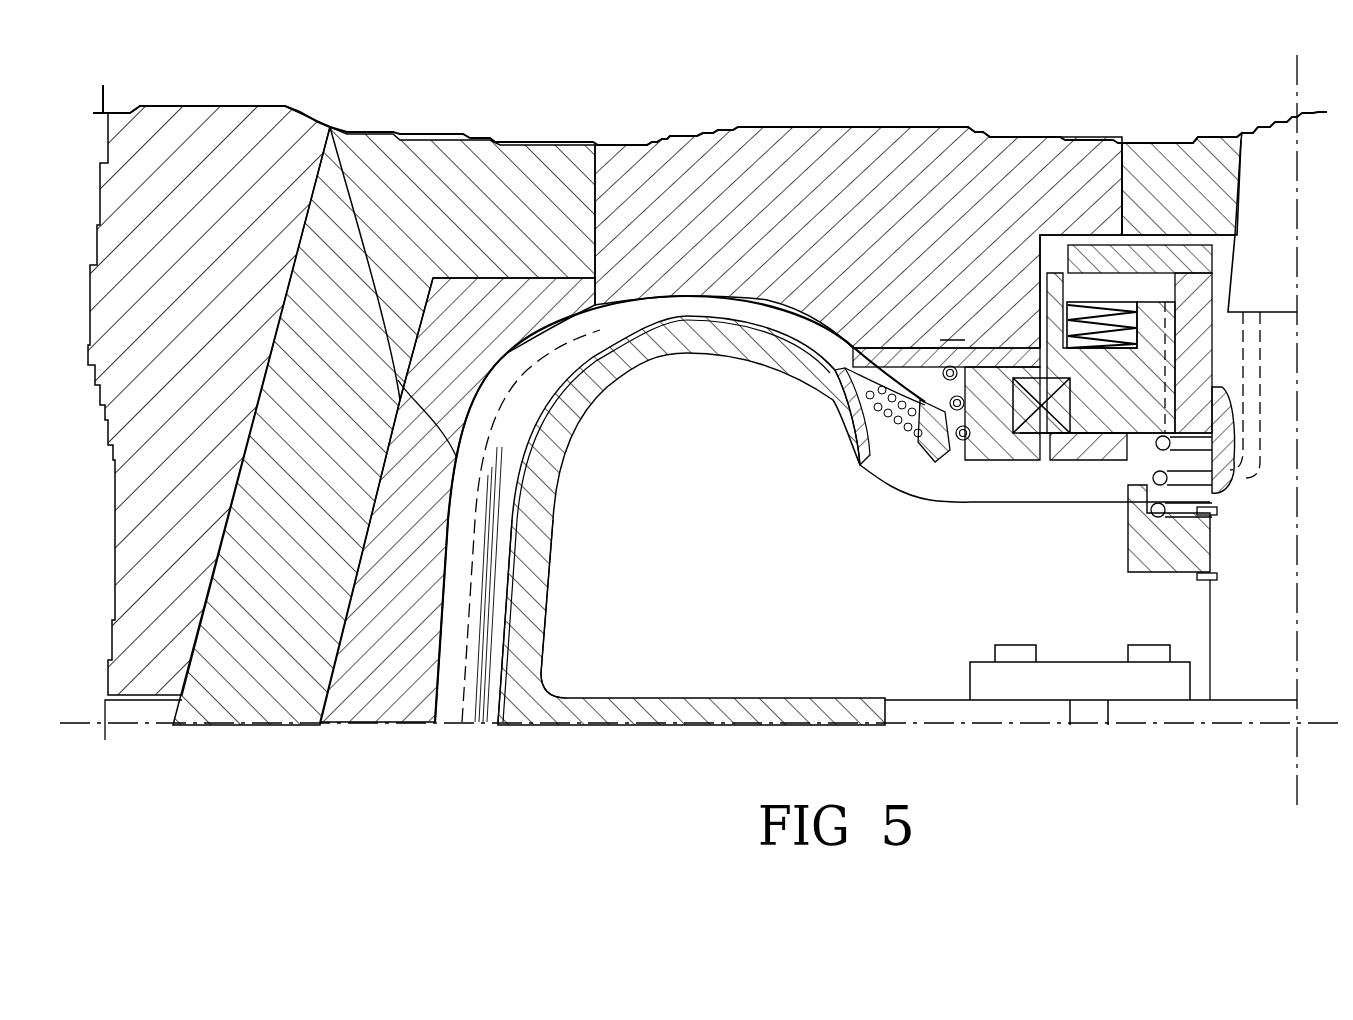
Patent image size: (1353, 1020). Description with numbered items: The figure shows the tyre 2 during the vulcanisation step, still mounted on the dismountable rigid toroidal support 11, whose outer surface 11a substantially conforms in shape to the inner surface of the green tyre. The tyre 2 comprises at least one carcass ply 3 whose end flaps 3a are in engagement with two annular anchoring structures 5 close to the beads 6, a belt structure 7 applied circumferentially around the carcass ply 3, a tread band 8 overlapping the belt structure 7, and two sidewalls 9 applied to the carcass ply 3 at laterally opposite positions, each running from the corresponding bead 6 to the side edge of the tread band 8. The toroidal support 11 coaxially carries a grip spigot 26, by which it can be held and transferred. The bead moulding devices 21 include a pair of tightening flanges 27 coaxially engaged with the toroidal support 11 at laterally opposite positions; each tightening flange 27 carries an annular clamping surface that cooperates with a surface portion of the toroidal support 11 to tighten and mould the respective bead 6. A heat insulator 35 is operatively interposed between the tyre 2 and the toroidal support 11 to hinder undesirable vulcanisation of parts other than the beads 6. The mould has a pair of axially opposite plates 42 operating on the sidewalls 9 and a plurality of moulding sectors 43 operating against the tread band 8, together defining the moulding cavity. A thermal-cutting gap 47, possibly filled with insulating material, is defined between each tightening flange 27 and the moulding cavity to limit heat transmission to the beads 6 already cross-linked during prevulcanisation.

The tyre 2 is at (637, 300).
The carcass ply 3 is at (693, 320).
The end flaps 3a is at (905, 440).
The annular anchoring structures 5 is at (897, 425).
The beads 6 is at (962, 442).
The belt structure 7 is at (473, 670).
The tread band 8 is at (347, 133).
The sidewalls 9 is at (707, 312).
The toroidal support 11 is at (522, 672).
The outer surface 11a is at (505, 547).
The bead moulding devices 21 is at (1012, 255).
The grip spigot 26 is at (1268, 188).
The tightening flanges 27 is at (950, 330).
The heat insulator 35 is at (847, 432).
The plates 42 is at (825, 170).
The moulding sectors 43 is at (477, 307).
The thermal-cutting gap 47 is at (855, 345).